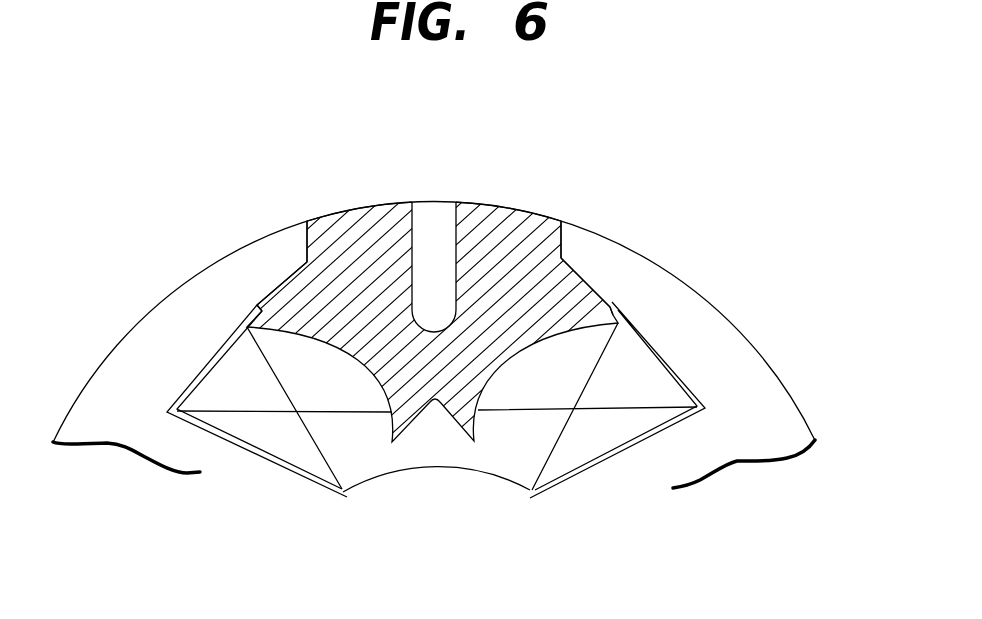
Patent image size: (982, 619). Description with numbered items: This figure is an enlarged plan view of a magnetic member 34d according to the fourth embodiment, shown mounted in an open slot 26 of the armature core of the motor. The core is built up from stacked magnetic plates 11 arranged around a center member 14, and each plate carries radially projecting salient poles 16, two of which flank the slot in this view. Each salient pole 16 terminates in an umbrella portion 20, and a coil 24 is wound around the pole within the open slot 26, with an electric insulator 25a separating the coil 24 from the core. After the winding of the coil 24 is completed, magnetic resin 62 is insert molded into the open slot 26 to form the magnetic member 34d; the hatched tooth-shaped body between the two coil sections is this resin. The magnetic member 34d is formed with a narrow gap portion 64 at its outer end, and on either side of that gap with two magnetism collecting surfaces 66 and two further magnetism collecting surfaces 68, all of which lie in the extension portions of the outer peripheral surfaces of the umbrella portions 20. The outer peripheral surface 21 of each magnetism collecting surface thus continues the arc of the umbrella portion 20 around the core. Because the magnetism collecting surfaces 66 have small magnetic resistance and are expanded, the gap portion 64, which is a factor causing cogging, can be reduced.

The magnetic plate 11 is at (445, 524).
The center member 14 is at (490, 480).
The salient pole 16 is at (137, 458).
The umbrella portion 20 is at (210, 293).
The outer peripheral surface 21 is at (225, 257).
The coil 24 is at (330, 394).
The electric insulator 25a is at (220, 430).
The open slot 26 is at (330, 258).
The magnetic member 34d is at (653, 217).
The magnetic resin 62 is at (450, 379).
The gap portion 64 is at (435, 210).
The magnetism collecting surface 66 is at (350, 210).
The magnetism collecting surface 68 is at (391, 201).